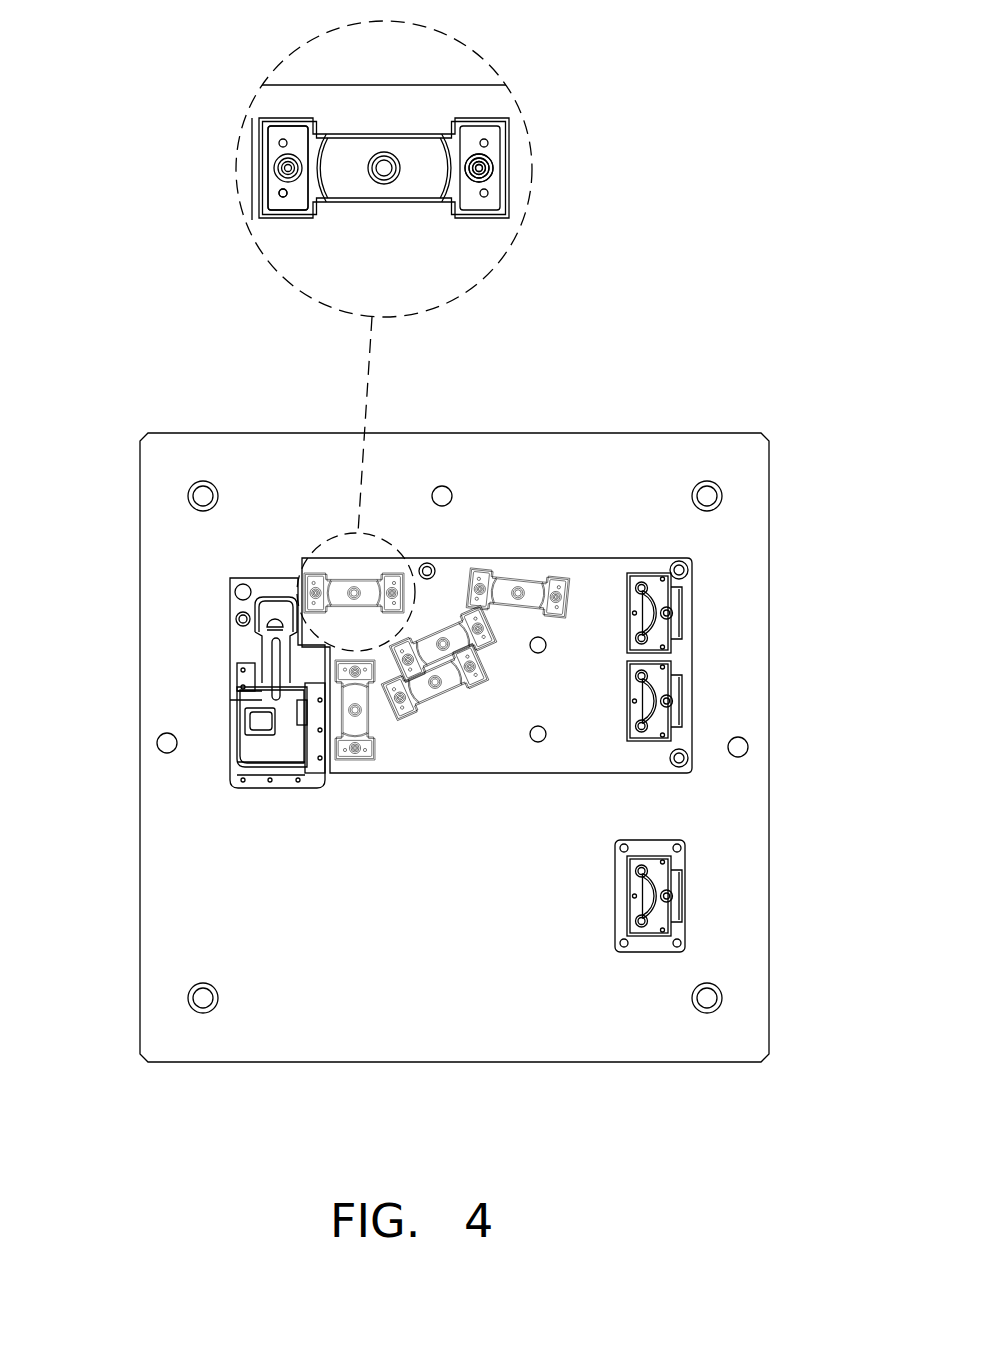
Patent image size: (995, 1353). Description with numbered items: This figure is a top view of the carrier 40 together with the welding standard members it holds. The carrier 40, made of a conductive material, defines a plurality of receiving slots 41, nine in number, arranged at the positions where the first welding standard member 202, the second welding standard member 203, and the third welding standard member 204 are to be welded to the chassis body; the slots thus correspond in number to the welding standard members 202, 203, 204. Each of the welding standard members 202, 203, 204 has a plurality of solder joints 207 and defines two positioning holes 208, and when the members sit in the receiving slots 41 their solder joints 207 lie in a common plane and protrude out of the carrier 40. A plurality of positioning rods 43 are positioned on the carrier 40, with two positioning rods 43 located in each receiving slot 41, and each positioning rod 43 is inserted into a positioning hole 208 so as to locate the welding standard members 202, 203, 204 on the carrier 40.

The carrier 40 is at (589, 583).
The receiving slots 41 is at (393, 136).
The positioning rods 43 is at (478, 165).
The first welding standard member 202 is at (273, 145).
The second welding standard member 203 is at (653, 613).
The third welding standard member 204 is at (272, 752).
The solder joints 207 is at (282, 193).
The positioning holes 208 is at (489, 176).